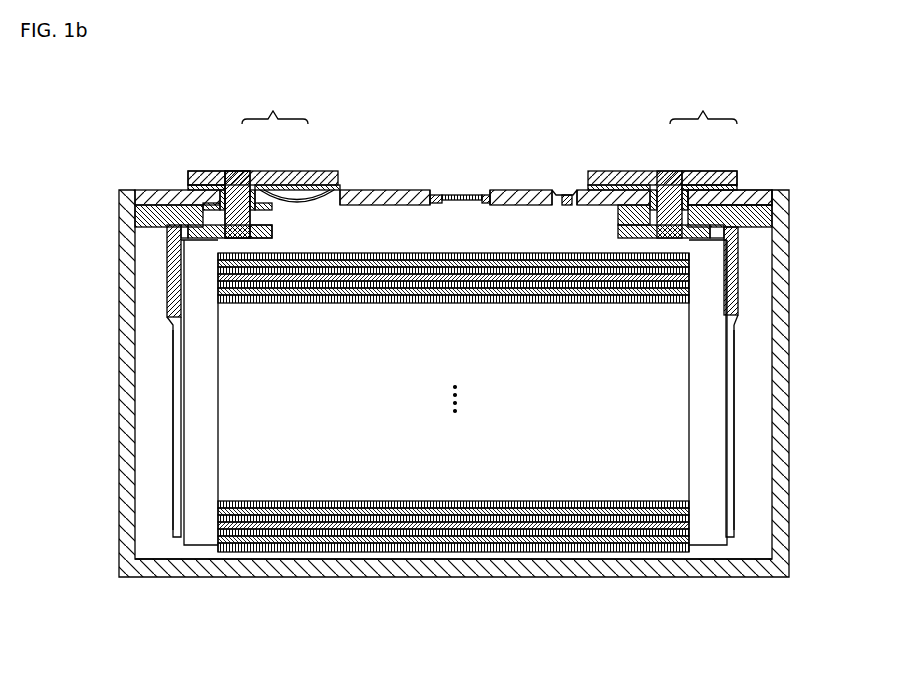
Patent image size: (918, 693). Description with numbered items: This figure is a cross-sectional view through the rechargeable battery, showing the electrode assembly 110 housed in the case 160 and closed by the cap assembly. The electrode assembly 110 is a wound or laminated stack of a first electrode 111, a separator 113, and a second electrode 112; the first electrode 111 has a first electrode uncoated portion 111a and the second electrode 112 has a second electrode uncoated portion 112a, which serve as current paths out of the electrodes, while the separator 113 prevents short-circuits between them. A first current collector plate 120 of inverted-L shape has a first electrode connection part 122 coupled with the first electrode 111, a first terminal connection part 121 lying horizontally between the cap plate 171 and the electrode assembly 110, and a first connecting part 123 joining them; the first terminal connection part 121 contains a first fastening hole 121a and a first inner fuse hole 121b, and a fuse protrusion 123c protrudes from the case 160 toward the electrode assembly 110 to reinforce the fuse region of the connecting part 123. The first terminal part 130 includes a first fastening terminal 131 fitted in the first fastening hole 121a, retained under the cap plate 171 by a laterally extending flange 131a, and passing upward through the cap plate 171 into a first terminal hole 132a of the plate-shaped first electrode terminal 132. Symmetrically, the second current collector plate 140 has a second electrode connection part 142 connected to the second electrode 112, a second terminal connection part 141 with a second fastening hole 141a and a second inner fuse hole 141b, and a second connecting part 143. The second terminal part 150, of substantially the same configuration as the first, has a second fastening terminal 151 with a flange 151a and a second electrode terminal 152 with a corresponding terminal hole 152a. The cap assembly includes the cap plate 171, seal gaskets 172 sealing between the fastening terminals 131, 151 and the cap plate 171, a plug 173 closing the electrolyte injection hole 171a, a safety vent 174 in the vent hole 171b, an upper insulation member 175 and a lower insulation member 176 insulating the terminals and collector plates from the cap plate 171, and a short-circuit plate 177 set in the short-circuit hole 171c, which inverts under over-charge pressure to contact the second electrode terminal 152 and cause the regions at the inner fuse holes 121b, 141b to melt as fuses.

The electrode assembly 110 is at (453, 444).
The first electrode 111 is at (507, 553).
The first electrode uncoated portion 111a is at (708, 548).
The second electrode 112 is at (405, 553).
The second electrode uncoated portion 112a is at (199, 546).
The separator 113 is at (455, 553).
The first current collector plate 120 is at (736, 363).
The first terminal connection part 121 is at (712, 272).
The first fastening hole 121a is at (738, 284).
The first inner fuse hole 121b is at (738, 178).
The first electrode connection part 122 is at (738, 437).
The first connecting part 123 is at (740, 233).
The fuse protrusion 123c is at (742, 318).
The first terminal part 130 is at (703, 106).
The first fastening terminal 131 is at (669, 171).
The flange 131a is at (622, 224).
The first electrode terminal 132 is at (720, 171).
The first terminal hole 132a is at (663, 185).
The second current collector plate 140 is at (172, 361).
The second terminal connection part 141 is at (180, 184).
The second fastening hole 141a is at (200, 237).
The second inner fuse hole 141b is at (188, 178).
The second electrode connection part 142 is at (180, 436).
The second connecting part 143 is at (170, 292).
The second terminal part 150 is at (275, 106).
The second fastening terminal 151 is at (245, 171).
The flange 151a is at (282, 226).
The second electrode terminal 152 is at (293, 171).
The second terminal plate lower part 152a is at (233, 184).
The case 160 is at (329, 559).
The cap plate 171 is at (399, 190).
The electrolyte injection hole 171a is at (560, 205).
The vent hole 171b is at (457, 205).
The short-circuit hole 171c is at (322, 206).
The seal gasket 172 is at (221, 188).
The plug 173 is at (567, 193).
The safety vent 174 is at (486, 190).
The upper insulation member 175 is at (338, 171).
The lower insulation member 176 is at (140, 218).
The short-circuit plate 177 is at (315, 171).